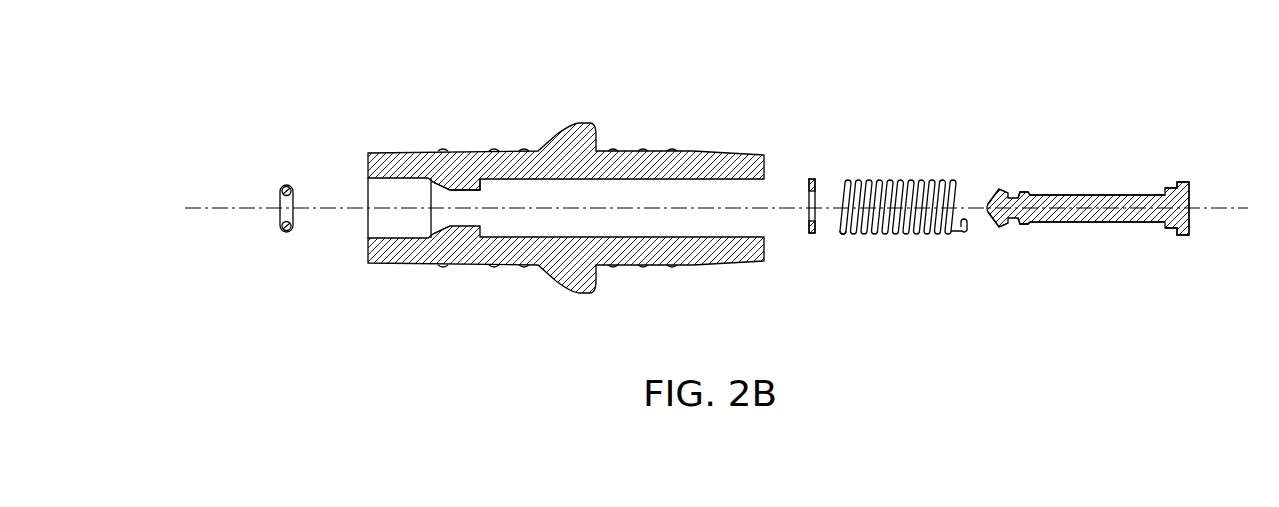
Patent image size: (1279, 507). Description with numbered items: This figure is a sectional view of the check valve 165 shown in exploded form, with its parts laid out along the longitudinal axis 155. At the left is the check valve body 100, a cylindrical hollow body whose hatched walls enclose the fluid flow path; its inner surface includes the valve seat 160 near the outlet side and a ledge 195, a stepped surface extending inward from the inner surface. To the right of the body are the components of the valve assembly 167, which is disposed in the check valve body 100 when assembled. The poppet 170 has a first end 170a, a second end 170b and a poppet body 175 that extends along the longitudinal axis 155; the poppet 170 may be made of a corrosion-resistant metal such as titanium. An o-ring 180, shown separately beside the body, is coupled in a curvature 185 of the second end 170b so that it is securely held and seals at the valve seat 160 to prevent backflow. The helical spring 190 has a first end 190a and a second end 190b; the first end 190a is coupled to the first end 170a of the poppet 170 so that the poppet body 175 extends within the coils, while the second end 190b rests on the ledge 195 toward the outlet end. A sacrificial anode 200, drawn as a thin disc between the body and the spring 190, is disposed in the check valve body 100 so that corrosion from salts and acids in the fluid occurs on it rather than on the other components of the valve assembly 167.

The check valve body 100 is at (378, 302).
The longitudinal axis 155 is at (1236, 207).
The valve seat 160 is at (436, 185).
The check valve 165 is at (282, 98).
The valve assembly 167 is at (985, 333).
The poppet 170 is at (1097, 176).
The first end of the poppet 170a is at (1182, 180).
The second end of the poppet 170b is at (996, 188).
The poppet body 175 is at (1112, 223).
The o-ring 180 is at (281, 188).
The curvature 185 is at (1022, 226).
The spring 190 is at (873, 180).
The first end of the spring 190a is at (964, 233).
The second end of the spring 190b is at (843, 234).
The ledge 195 is at (477, 183).
The sacrificial anode 200 is at (812, 234).